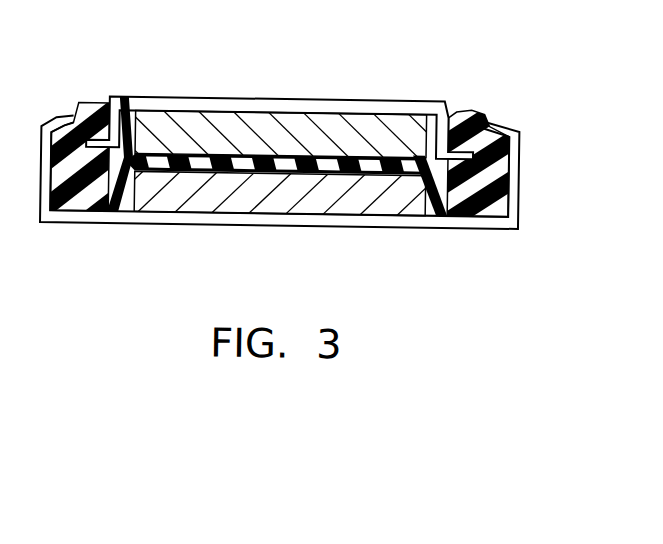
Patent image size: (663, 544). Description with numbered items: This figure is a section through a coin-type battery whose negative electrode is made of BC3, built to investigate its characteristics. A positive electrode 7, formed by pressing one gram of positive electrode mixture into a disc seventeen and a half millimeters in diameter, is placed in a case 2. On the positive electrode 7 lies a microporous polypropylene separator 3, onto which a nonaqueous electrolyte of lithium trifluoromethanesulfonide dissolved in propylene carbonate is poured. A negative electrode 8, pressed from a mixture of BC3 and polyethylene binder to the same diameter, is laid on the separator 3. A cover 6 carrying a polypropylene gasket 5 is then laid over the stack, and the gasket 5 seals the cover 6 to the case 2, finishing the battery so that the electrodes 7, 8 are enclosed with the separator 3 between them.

The case 2 is at (518, 188).
The microporous polypropylene separator 3 is at (445, 207).
The polypropylene gasket 5 is at (475, 106).
The cover 6 is at (208, 97).
The positive electrode 7 is at (273, 197).
The negative electrode 8 is at (111, 95).